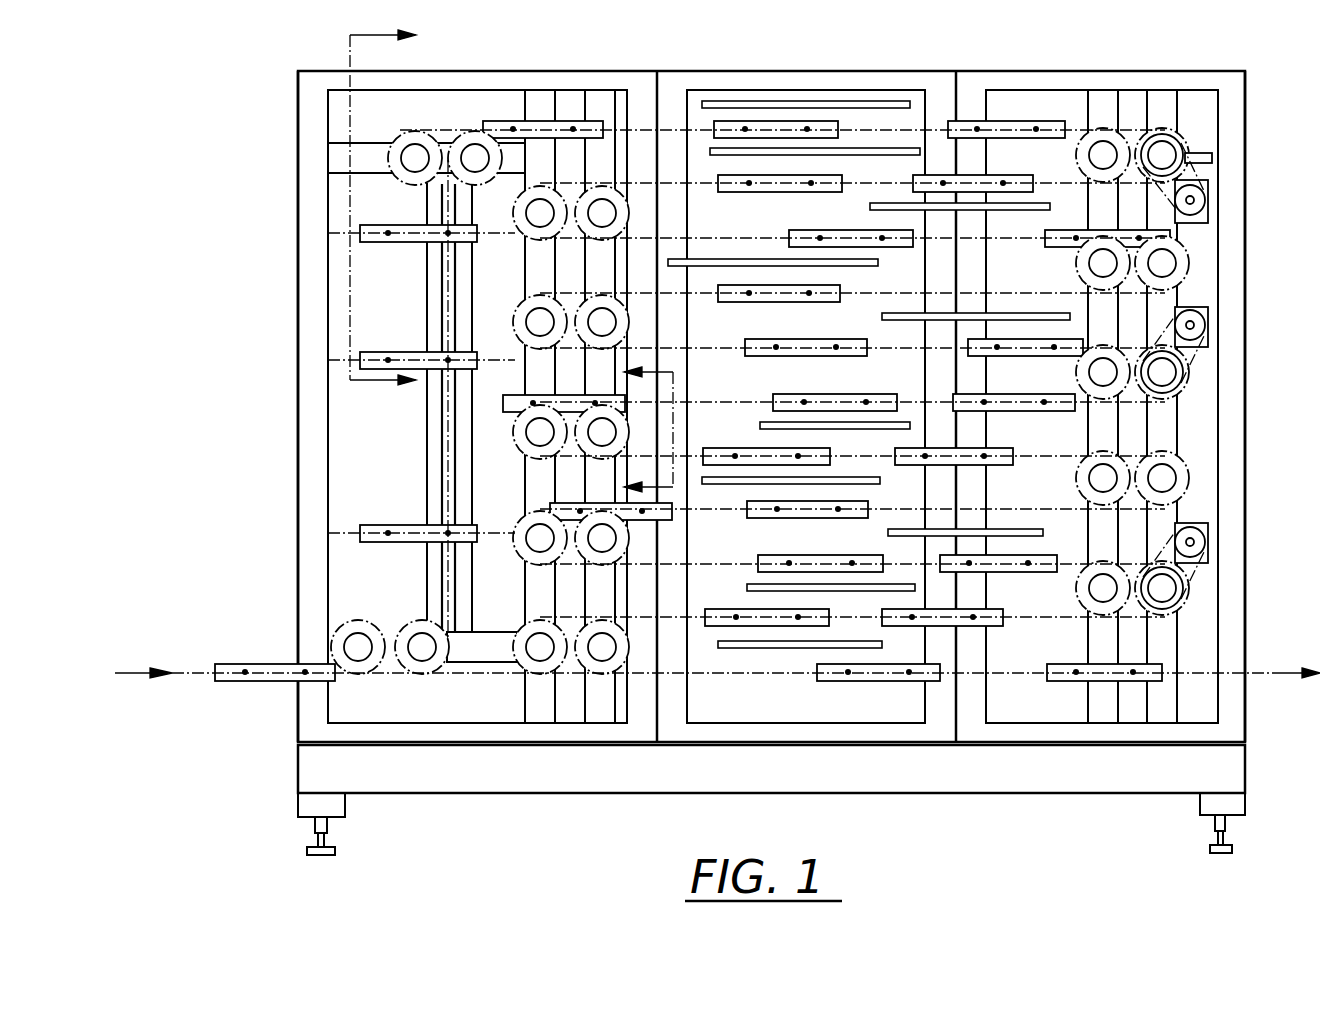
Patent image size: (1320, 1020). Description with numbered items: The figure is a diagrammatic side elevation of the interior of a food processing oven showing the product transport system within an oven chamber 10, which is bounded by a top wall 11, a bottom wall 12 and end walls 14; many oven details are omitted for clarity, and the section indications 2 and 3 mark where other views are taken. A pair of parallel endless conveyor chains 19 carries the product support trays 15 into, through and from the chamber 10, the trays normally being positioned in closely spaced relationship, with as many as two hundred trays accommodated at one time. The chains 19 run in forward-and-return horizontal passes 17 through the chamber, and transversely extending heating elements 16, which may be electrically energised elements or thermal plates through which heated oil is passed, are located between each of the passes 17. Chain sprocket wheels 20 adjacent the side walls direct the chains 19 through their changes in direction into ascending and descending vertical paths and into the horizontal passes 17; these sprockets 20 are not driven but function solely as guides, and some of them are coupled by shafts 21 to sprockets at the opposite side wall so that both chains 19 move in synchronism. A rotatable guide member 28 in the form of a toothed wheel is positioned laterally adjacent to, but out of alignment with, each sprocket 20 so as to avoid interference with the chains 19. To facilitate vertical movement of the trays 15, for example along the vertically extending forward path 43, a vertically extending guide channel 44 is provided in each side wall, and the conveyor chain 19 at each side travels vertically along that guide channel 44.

The section line 2- 2 is at (363, 222).
The section line 3- 3 is at (664, 435).
The oven chamber 10 is at (752, 55).
The top wall 11 is at (848, 80).
The bottom wall 12 is at (850, 742).
The end walls 14 is at (295, 328).
The product support trays 15 is at (1000, 122).
The heating elements 16 is at (738, 100).
The forward-and-return horizontal passes 17 is at (1037, 287).
The endless conveyor chains 19 is at (188, 672).
The chain sprocket wheels 20 is at (477, 136).
The shafts 21 is at (1210, 206).
The rotatable guide member 28 is at (415, 137).
The vertically extending forward path 43 is at (440, 272).
The guide channel 44 is at (440, 302).